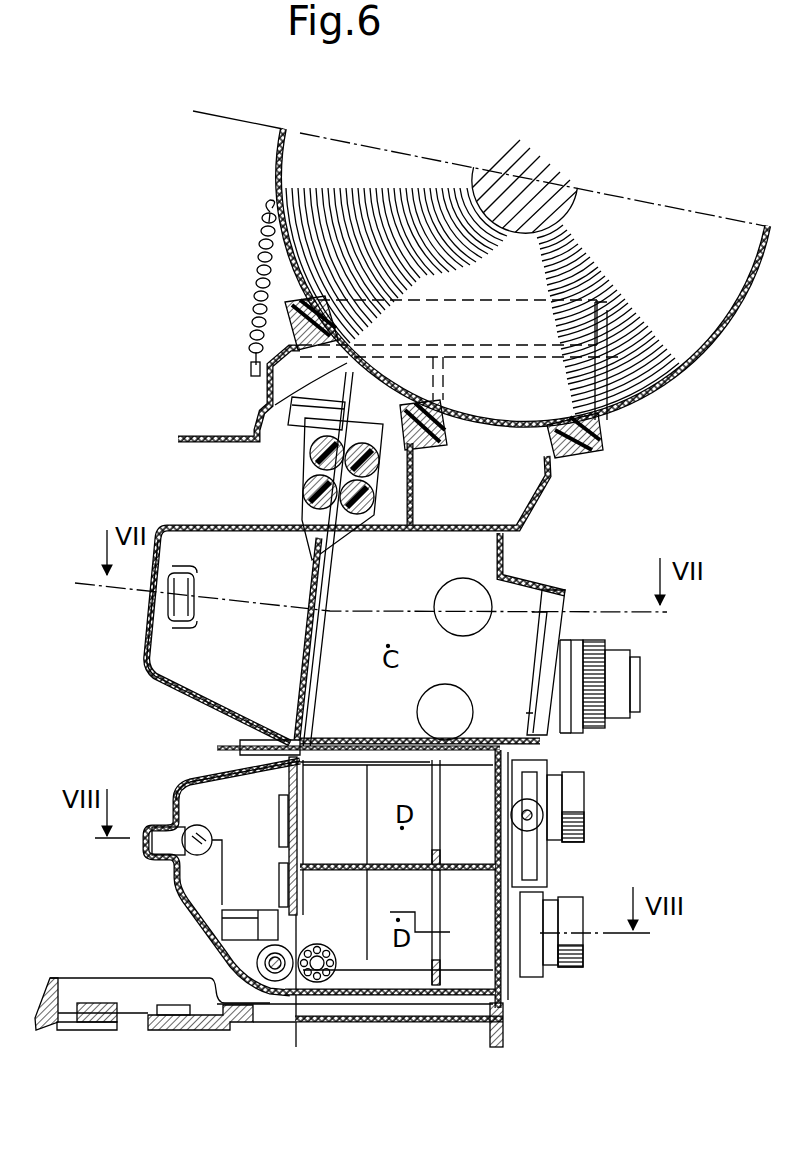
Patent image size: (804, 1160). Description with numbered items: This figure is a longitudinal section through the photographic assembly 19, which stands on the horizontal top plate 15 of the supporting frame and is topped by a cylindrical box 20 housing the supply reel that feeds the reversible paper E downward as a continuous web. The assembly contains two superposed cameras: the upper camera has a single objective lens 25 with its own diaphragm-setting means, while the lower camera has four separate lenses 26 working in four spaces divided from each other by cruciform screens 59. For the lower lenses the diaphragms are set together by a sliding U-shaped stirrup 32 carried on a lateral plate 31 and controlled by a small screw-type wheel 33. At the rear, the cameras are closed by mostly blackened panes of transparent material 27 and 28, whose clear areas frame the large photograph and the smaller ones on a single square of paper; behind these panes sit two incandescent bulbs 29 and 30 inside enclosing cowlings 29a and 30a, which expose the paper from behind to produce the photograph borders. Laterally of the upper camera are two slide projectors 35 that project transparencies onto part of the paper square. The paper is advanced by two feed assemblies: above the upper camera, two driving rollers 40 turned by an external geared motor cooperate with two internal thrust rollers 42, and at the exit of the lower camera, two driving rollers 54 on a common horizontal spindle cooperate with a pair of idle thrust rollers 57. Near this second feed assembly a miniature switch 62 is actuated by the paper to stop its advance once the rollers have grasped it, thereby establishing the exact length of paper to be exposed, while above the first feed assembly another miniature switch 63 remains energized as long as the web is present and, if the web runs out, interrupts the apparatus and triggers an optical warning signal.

The cylindrical box 20 is at (660, 350).
The photographic assembly 19 is at (586, 546).
The reversible paper E is at (275, 405).
The miniature switch 63 is at (310, 420).
The driving rollers 40 is at (307, 480).
The thrust rollers 42 is at (372, 495).
The incandescent bulb 29 is at (187, 588).
The pane of transparent material 27 is at (312, 585).
The enclosing cowling 29a is at (165, 688).
The slide projectors 35 is at (462, 683).
The objective lens 25 is at (578, 642).
The incandescent bulb 30 is at (173, 820).
The enclosing cowling 30a is at (183, 783).
The pane of transparent material 28 is at (282, 808).
The cruciform screens 59 is at (338, 865).
The idle thrust rollers 57 is at (317, 942).
The miniature switch 62 is at (213, 920).
The driving rollers 54 is at (253, 963).
The top plate 15 is at (138, 973).
The lateral plate 31 is at (540, 760).
The sliding U-shaped stirrup 32 is at (522, 783).
The screw-type wheel 33 is at (545, 813).
The lenses 26 is at (569, 895).